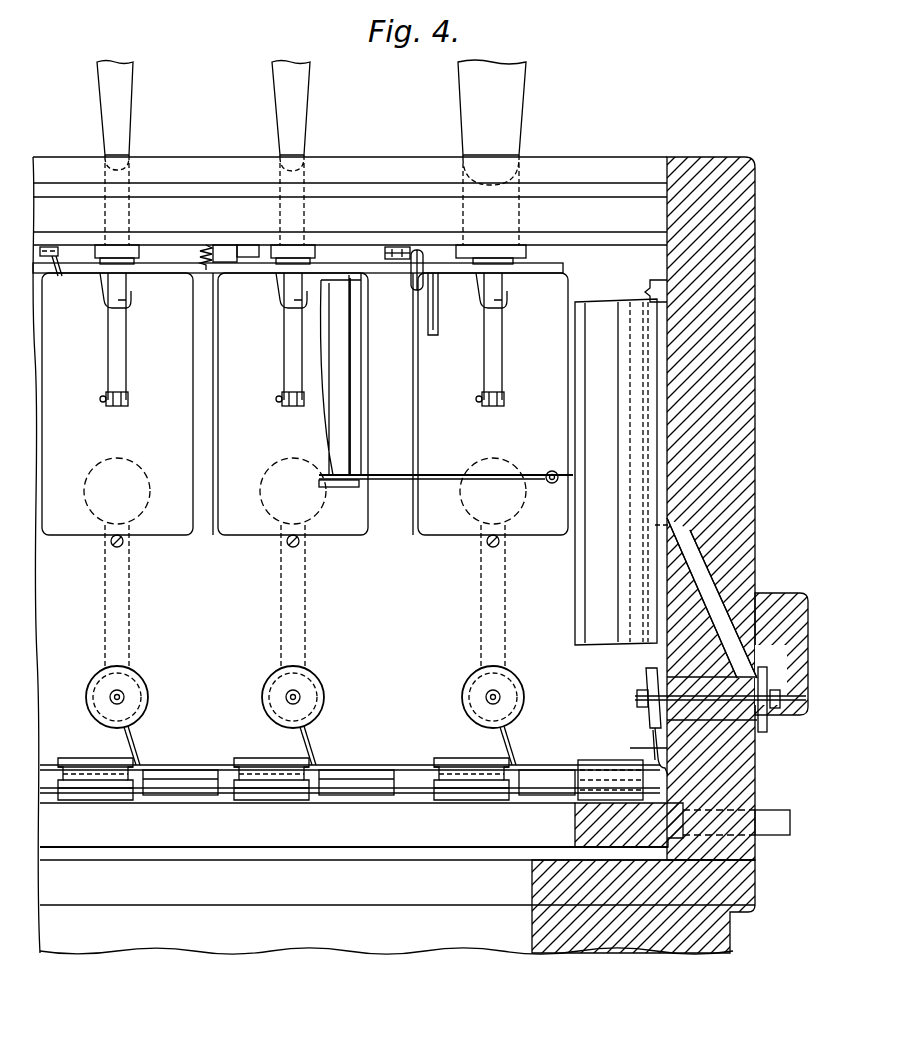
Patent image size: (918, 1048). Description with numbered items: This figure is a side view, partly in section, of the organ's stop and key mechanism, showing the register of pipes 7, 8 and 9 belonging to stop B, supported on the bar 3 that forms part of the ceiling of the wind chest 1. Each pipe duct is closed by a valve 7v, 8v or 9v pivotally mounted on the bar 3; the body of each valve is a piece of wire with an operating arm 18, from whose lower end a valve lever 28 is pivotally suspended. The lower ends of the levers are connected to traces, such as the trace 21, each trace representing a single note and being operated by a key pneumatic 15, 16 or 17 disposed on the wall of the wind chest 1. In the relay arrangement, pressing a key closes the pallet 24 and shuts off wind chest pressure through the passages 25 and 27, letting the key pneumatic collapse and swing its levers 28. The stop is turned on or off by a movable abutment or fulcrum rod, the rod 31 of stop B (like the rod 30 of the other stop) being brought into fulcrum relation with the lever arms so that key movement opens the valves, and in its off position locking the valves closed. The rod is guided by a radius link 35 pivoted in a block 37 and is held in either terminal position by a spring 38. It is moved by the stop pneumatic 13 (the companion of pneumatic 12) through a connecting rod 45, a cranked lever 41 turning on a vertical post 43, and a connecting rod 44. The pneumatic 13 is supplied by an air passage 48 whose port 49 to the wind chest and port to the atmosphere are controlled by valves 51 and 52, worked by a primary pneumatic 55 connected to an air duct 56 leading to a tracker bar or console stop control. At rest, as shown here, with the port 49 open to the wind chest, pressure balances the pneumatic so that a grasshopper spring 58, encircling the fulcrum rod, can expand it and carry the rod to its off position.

The wind chest 1 is at (640, 748).
The bar 3 is at (612, 168).
The pipe 7 is at (123, 115).
The pipe 8 is at (308, 110).
The pipe 9 is at (515, 115).
The valve 7v is at (128, 251).
The valve 8v is at (306, 251).
The valve 9v is at (512, 251).
The stop pneumatic 12 is at (643, 298).
The stop pneumatic 13 is at (577, 306).
The key pneumatic 15 is at (95, 527).
The key pneumatic 16 is at (240, 527).
The key pneumatic 17 is at (425, 444).
The operating arm 18 is at (100, 297).
The trace 21 is at (282, 415).
The pallet 24 is at (147, 690).
The passage 25 is at (138, 706).
The passage 27 is at (128, 632).
The valve lever 28 is at (123, 354).
The fulcrum rod 30 is at (752, 711).
The fulcrum rod 31 is at (184, 274).
The radius link 35 is at (72, 250).
The block 37 is at (398, 246).
The spring 38 is at (209, 249).
The cranked lever 41 is at (355, 428).
The vertical post 43 is at (345, 358).
The connecting rod 44 is at (412, 289).
The connecting rod 45 is at (428, 477).
The air passage 48 is at (696, 604).
The port 49 is at (664, 693).
The valve 51 is at (647, 687).
The valve 52 is at (767, 720).
The primary pneumatic 55 is at (601, 768).
The air duct 56 is at (770, 818).
The spring 58 is at (438, 338).